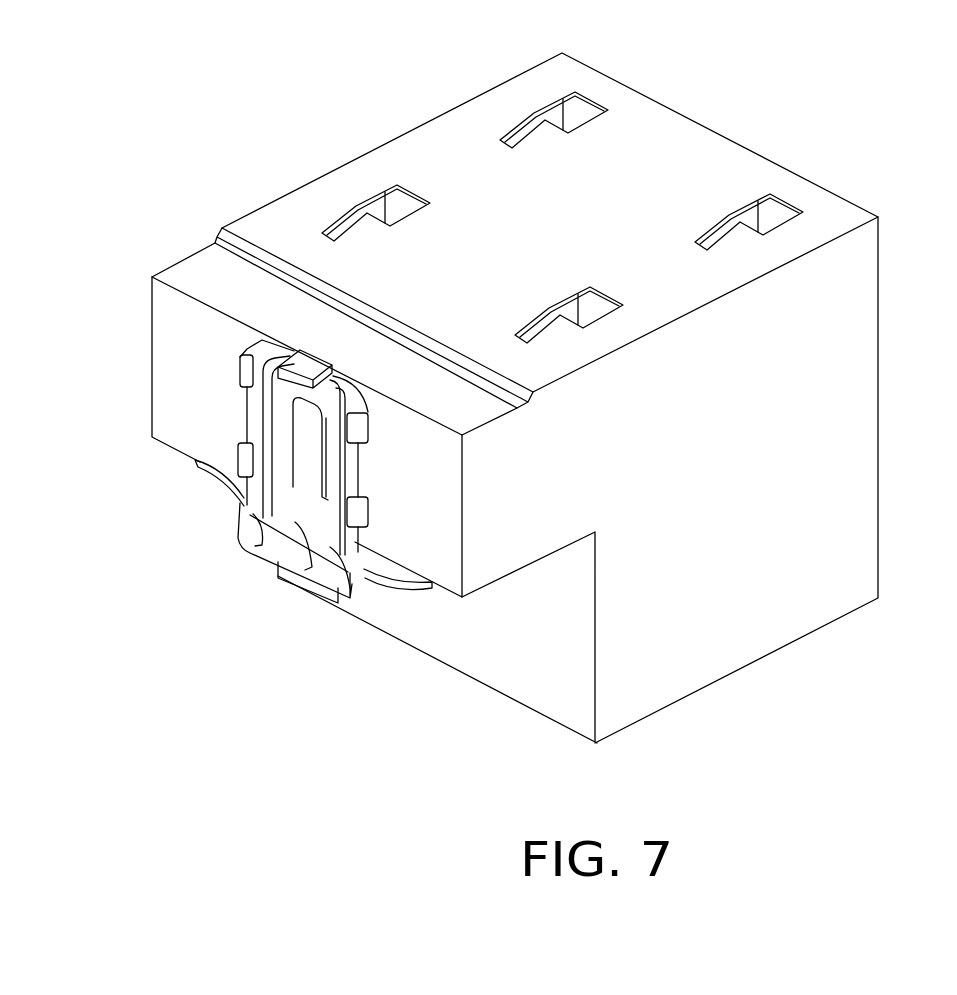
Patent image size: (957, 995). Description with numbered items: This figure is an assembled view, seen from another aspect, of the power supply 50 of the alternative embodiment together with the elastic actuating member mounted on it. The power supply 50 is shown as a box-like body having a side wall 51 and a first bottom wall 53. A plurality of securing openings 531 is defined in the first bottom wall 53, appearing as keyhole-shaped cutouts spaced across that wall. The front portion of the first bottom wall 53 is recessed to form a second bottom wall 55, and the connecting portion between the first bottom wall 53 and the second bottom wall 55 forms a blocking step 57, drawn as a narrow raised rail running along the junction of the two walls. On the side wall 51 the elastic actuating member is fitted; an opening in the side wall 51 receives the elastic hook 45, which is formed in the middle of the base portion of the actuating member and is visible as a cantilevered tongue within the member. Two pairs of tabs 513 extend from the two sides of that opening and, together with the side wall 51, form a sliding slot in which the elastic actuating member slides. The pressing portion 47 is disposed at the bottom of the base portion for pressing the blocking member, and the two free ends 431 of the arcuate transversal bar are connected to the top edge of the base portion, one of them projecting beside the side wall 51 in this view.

The power supply 50 is at (828, 128).
The side wall 51 is at (163, 372).
The tabs 513 is at (243, 460).
The first bottom wall 53 is at (483, 106).
The securing openings 531 is at (388, 195).
The second bottom wall 55 is at (188, 283).
The blocking step 57 is at (250, 243).
The elastic hook 45 is at (310, 443).
The pressing portion 47 is at (300, 367).
The free ends 431 is at (400, 590).